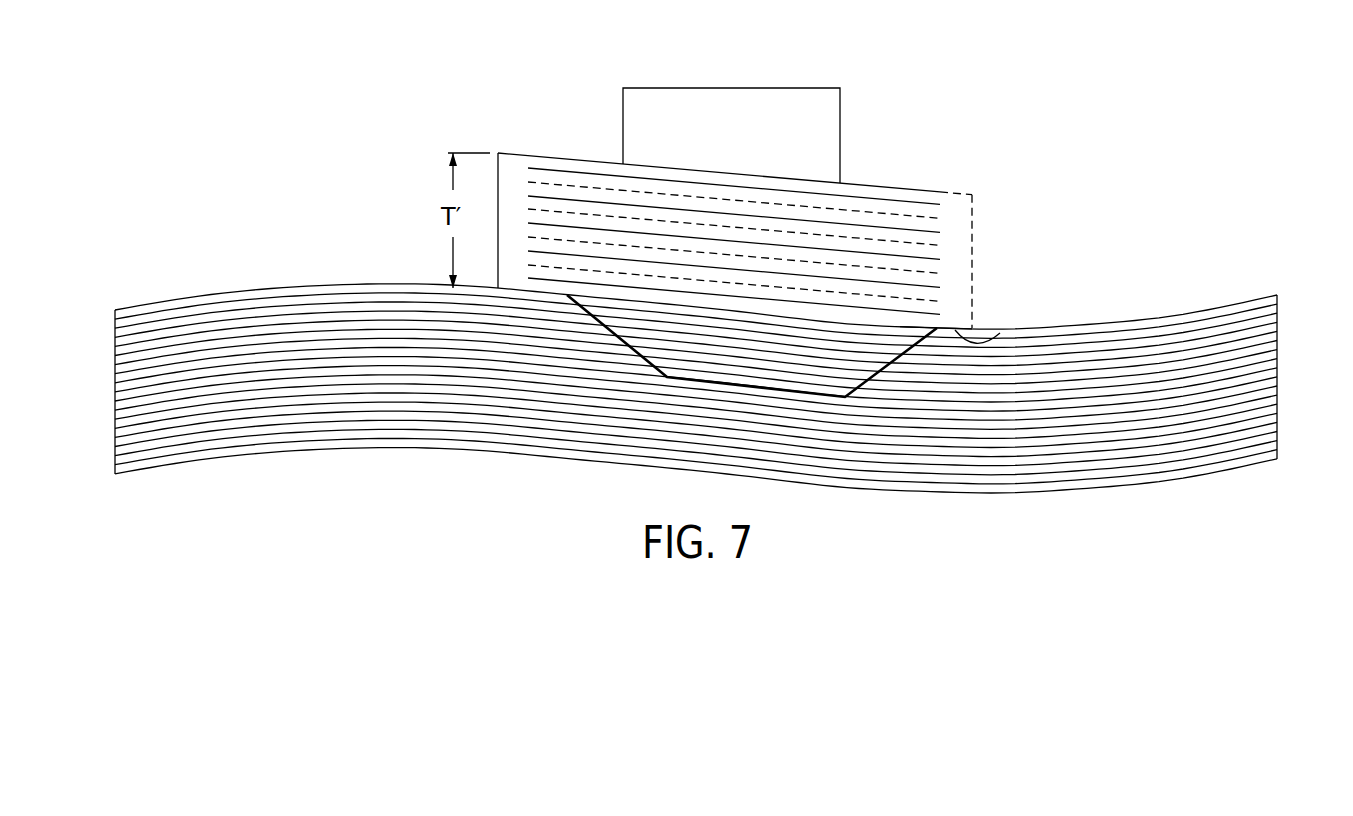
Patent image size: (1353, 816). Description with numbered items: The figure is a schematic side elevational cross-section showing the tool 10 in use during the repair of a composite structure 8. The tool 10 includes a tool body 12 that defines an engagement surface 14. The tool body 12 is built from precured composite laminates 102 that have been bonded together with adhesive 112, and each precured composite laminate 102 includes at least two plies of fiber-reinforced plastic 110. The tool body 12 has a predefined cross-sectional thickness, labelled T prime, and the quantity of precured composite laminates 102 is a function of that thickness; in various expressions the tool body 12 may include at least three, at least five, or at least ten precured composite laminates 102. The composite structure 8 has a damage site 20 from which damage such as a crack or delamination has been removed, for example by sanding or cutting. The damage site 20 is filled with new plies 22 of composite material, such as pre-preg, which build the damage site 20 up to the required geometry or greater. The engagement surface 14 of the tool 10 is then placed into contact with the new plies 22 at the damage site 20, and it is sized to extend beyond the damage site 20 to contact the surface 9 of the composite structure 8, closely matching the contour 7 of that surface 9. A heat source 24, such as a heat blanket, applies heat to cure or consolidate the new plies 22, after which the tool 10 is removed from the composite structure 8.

The contour 7 is at (721, 391).
The composite structure 8 is at (1277, 370).
The surface 9 is at (1165, 317).
The tool 10 is at (767, 214).
The tool body 12 is at (958, 312).
The engagement surface 14 is at (993, 340).
The damage site 20 is at (545, 397).
The new plies 22 is at (663, 435).
The heat source 24 is at (730, 88).
The precured composite laminates 102 is at (865, 199).
The plies of fiber-reinforced plastic 110 is at (972, 194).
The adhesive 112 is at (930, 246).